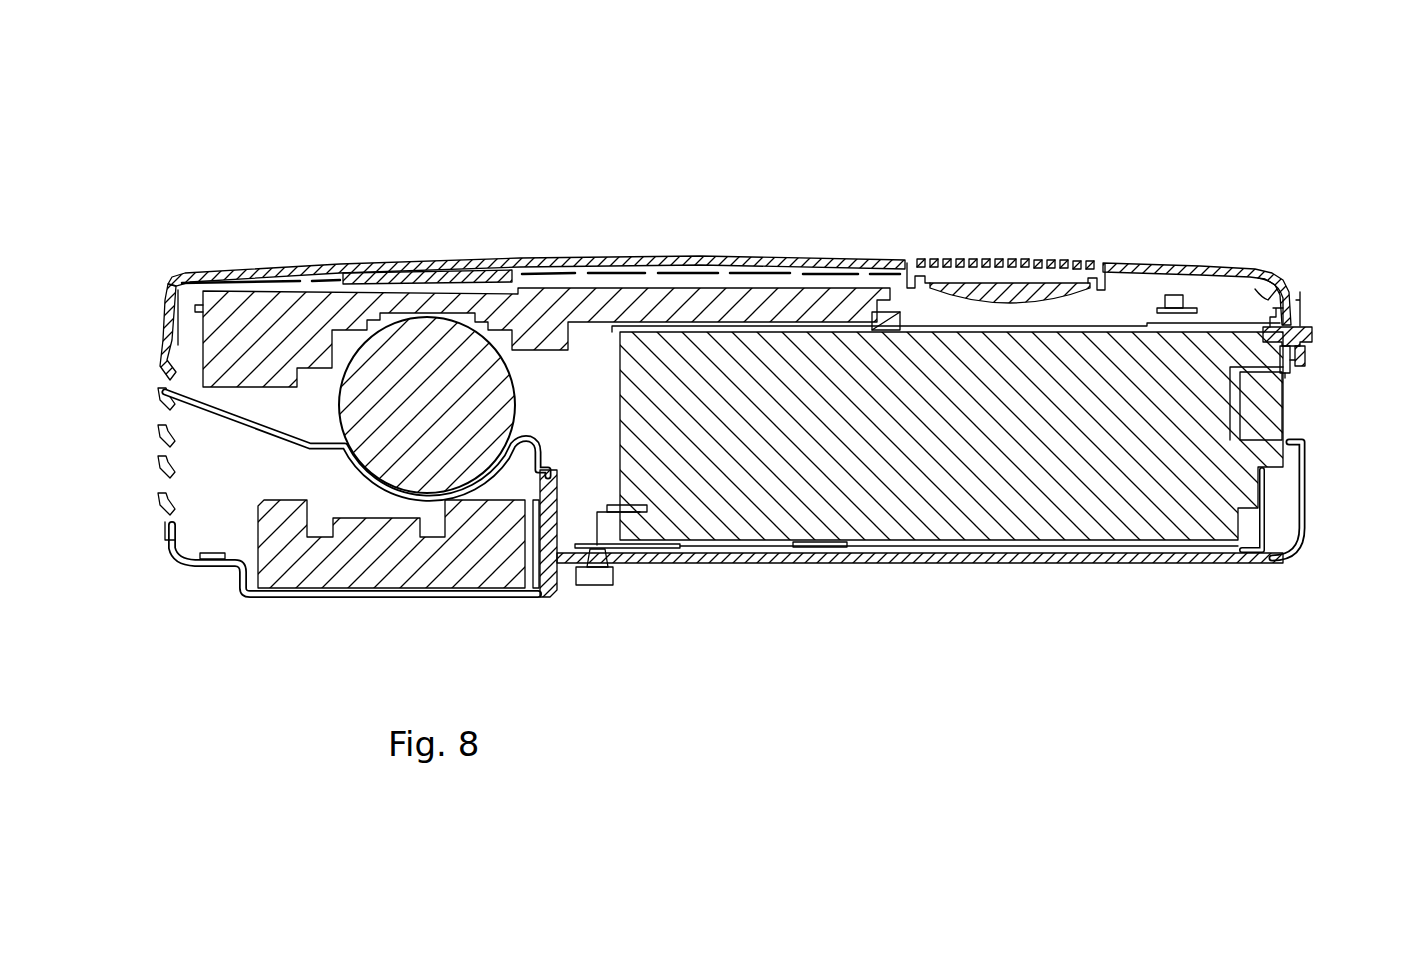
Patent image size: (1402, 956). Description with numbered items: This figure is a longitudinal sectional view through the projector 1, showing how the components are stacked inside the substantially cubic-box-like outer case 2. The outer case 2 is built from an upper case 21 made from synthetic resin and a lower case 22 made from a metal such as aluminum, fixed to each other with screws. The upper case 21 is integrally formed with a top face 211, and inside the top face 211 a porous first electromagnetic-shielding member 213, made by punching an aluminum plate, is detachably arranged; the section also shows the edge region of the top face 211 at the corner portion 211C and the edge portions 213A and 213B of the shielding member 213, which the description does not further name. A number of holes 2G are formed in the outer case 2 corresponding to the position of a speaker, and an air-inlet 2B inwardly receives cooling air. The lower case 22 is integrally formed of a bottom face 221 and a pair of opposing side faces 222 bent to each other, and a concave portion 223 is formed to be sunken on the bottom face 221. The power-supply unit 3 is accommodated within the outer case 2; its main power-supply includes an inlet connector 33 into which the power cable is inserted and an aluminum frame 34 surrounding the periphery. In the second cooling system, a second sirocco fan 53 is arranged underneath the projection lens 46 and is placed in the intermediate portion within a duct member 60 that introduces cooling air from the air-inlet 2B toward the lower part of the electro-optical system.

The projector 1 is at (1226, 84).
The outer case 2 is at (700, 257).
The upper case 21 is at (532, 262).
The top face 211 is at (835, 260).
The housing corner portion 211C is at (1302, 302).
The first electromagnetic-shielding member 213 is at (1200, 272).
The cover edge 213A is at (1288, 284).
The cover engaging portion 213B is at (1300, 318).
The holes 2G is at (1040, 262).
The air-inlet 2B is at (165, 452).
The lower case 22 is at (850, 565).
The bottom face 221 is at (755, 565).
The side faces 222 is at (160, 347).
The concave portion 223 is at (238, 580).
The power-supply unit 3 is at (1098, 353).
The inlet connector 33 is at (1300, 372).
The aluminum frame 34 is at (1262, 300).
The projection lens 46 is at (494, 410).
The second sirocco fan 53 is at (400, 570).
The duct member 60 is at (268, 433).